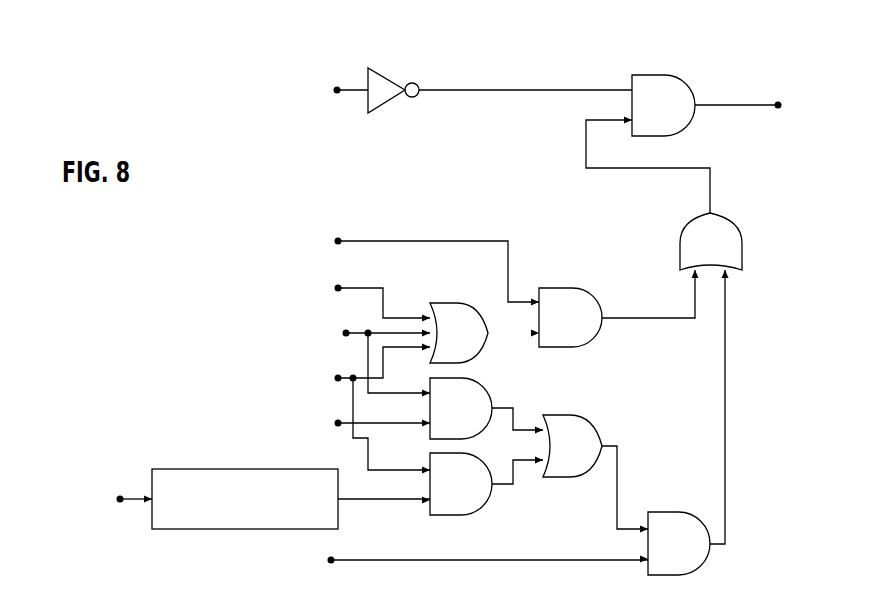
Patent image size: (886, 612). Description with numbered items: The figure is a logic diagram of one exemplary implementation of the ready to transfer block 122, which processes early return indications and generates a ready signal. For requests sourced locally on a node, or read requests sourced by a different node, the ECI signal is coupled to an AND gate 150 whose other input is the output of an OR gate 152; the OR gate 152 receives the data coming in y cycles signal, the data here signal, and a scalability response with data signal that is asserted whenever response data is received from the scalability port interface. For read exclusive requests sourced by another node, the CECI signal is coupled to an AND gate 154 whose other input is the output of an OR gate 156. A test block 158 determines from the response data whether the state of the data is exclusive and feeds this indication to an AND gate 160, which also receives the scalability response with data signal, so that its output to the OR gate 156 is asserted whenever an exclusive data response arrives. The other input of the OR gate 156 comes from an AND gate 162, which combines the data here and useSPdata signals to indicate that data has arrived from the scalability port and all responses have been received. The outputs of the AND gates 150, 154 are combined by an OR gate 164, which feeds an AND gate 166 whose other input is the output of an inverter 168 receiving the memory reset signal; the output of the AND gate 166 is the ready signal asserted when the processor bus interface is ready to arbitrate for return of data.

The ready to transfer block 122 is at (725, 47).
The inverter 168 is at (378, 68).
The AND gate 166 is at (655, 75).
The OR gate 164 is at (692, 228).
The AND gate 150 is at (572, 288).
The OR gate 152 is at (470, 303).
The AND gate 162 is at (480, 378).
The OR gate 156 is at (590, 415).
The AND gate 160 is at (452, 515).
The AND gate 154 is at (706, 520).
The test block 158 is at (190, 469).